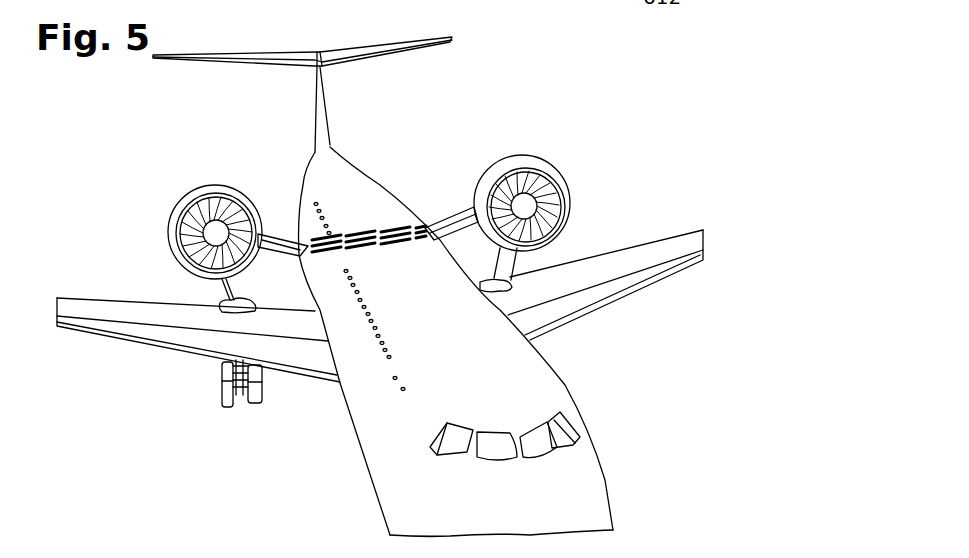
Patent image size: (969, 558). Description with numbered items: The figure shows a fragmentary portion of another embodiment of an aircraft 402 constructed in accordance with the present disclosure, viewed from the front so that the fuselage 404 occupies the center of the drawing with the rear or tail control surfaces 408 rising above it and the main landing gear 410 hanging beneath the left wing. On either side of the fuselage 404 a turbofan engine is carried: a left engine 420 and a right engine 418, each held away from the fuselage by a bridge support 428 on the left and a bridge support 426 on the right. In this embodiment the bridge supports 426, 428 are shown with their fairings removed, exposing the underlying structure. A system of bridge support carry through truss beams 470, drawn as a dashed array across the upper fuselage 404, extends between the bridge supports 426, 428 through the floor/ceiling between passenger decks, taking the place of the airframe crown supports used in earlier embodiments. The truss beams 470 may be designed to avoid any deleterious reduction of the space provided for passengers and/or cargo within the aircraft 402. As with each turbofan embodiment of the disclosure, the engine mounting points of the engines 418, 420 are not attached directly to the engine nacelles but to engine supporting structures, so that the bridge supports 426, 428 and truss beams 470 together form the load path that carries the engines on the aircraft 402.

The aircraft 402 is at (489, 135).
The fuselage 404 is at (362, 441).
The tail control surfaces 408 is at (375, 42).
The main landing gear 410 is at (227, 408).
The right engine 418 is at (544, 162).
The left engine 420 is at (176, 203).
The bridge support 426 is at (445, 219).
The bridge support 428 is at (290, 235).
The bridge support carry through truss beams 470 is at (387, 227).